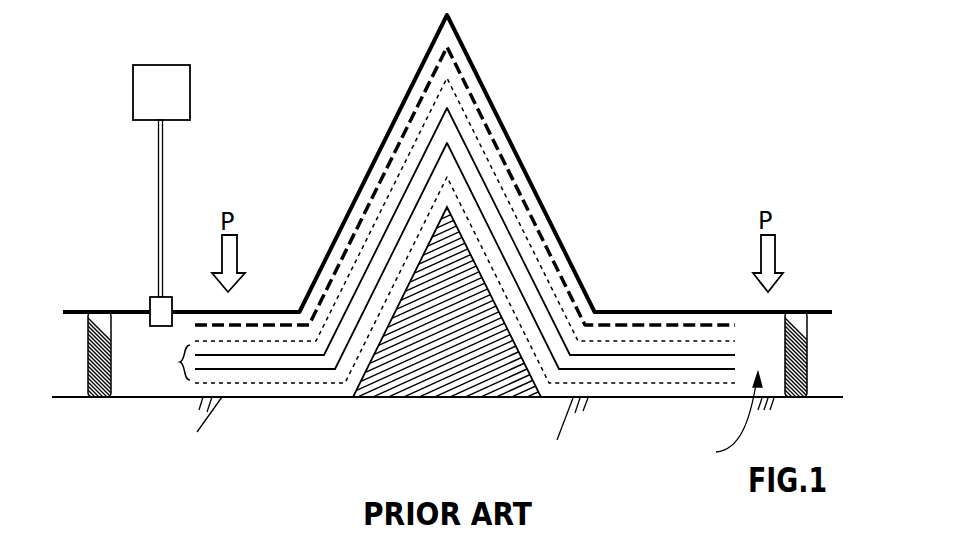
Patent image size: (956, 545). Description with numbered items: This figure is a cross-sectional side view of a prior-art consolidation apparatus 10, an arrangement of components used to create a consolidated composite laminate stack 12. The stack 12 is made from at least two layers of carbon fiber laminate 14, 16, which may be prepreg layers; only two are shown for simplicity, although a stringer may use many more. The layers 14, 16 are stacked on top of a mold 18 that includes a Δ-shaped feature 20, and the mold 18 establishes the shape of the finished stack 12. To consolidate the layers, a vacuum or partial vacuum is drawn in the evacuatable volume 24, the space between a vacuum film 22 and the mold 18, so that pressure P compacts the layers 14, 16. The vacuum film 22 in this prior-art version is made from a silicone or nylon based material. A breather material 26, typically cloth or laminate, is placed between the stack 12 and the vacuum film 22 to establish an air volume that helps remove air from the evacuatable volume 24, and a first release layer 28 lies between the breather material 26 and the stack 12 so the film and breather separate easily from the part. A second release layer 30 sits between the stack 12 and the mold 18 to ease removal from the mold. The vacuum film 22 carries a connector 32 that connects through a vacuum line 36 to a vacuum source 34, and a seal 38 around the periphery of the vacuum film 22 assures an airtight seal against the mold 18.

The consolidation apparatus 10 is at (660, 93).
The composite laminate stack 12 is at (178, 362).
The layer of carbon fiber laminate 14 is at (672, 370).
The layer of carbon fiber laminate 16 is at (522, 263).
The mold 18 is at (553, 398).
The Δ-shaped feature 20 is at (447, 376).
The vacuum film 22 is at (482, 78).
The evacuatable volume 24 is at (722, 422).
The breather material 26 is at (488, 128).
The first release layer 28 is at (513, 215).
The second release layer 30 is at (302, 386).
The connector 32 is at (150, 300).
The vacuum source 34 is at (177, 104).
The vacuum line 36 is at (162, 178).
The seal 38 is at (100, 314).